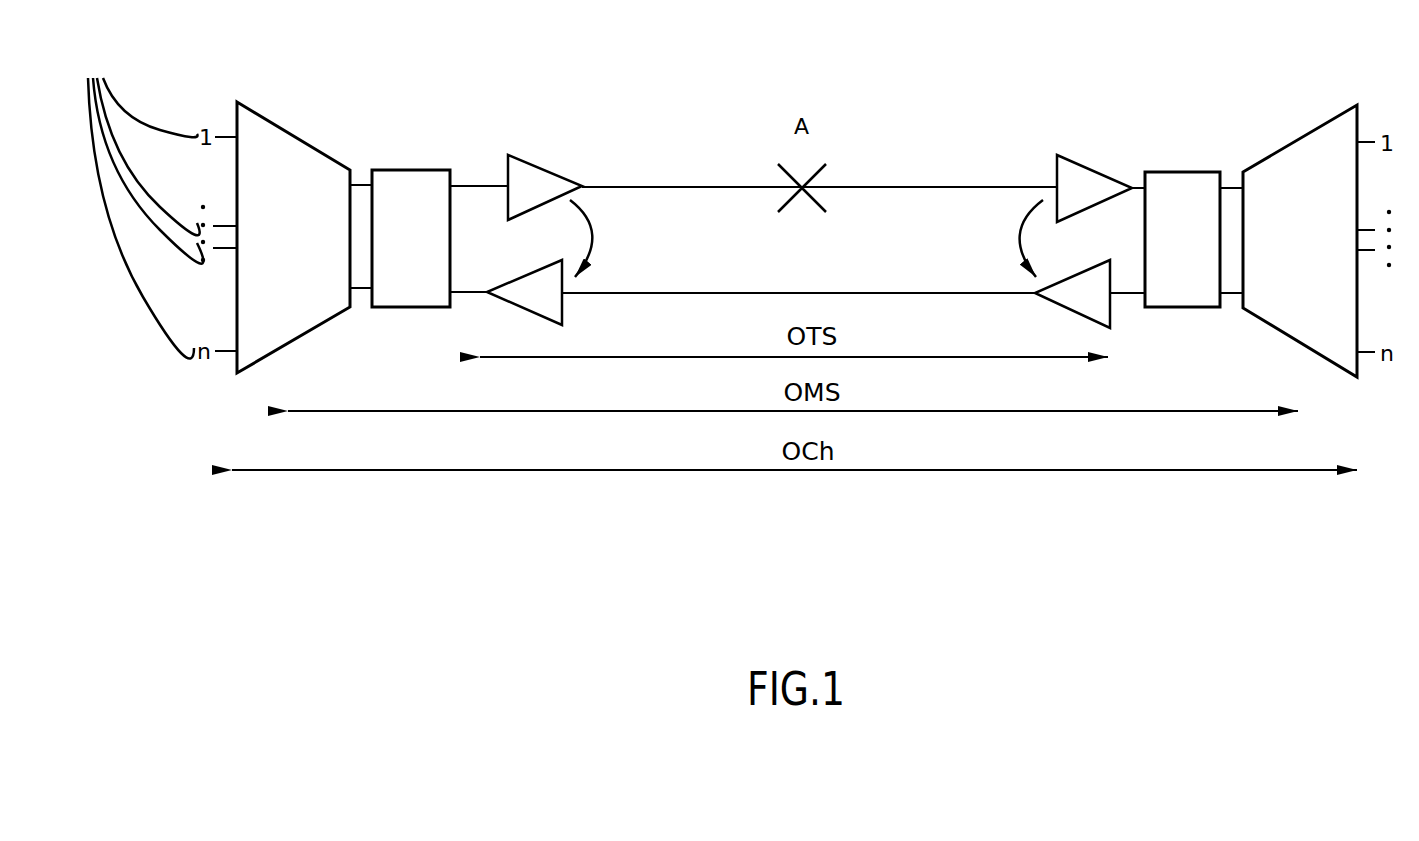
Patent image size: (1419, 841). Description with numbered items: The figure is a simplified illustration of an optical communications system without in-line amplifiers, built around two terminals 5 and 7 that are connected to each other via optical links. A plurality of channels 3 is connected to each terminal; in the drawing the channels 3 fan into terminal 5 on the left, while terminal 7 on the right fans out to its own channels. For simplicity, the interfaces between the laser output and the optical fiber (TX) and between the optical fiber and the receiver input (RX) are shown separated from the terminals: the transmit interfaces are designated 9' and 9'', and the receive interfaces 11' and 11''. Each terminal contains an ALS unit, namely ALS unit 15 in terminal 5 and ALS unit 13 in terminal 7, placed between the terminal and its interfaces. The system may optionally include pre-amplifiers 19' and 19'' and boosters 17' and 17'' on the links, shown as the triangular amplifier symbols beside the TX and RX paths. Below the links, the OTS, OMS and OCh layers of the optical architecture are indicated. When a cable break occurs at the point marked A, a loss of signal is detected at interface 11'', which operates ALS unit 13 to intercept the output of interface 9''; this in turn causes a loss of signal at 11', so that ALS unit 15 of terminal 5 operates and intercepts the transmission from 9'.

The channels 3 is at (143, 203).
The terminal 5 is at (292, 133).
The terminal 7 is at (1300, 135).
The interface between laser output and optical fiber (TX) 9' is at (479, 110).
The interface between laser output and optical fiber (TX) 9'' is at (1158, 337).
The interface between optical fiber and receiver input (RX) 11' is at (421, 340).
The interface between optical fiber and receiver input (RX) 11'' is at (1163, 101).
The ALS unit 13 is at (1190, 172).
The ALS unit 15 is at (410, 170).
The booster 17' is at (540, 399).
The booster 17'' is at (1062, 143).
The pre-amplifier 19' is at (569, 127).
The pre-amplifier 19'' is at (1058, 403).